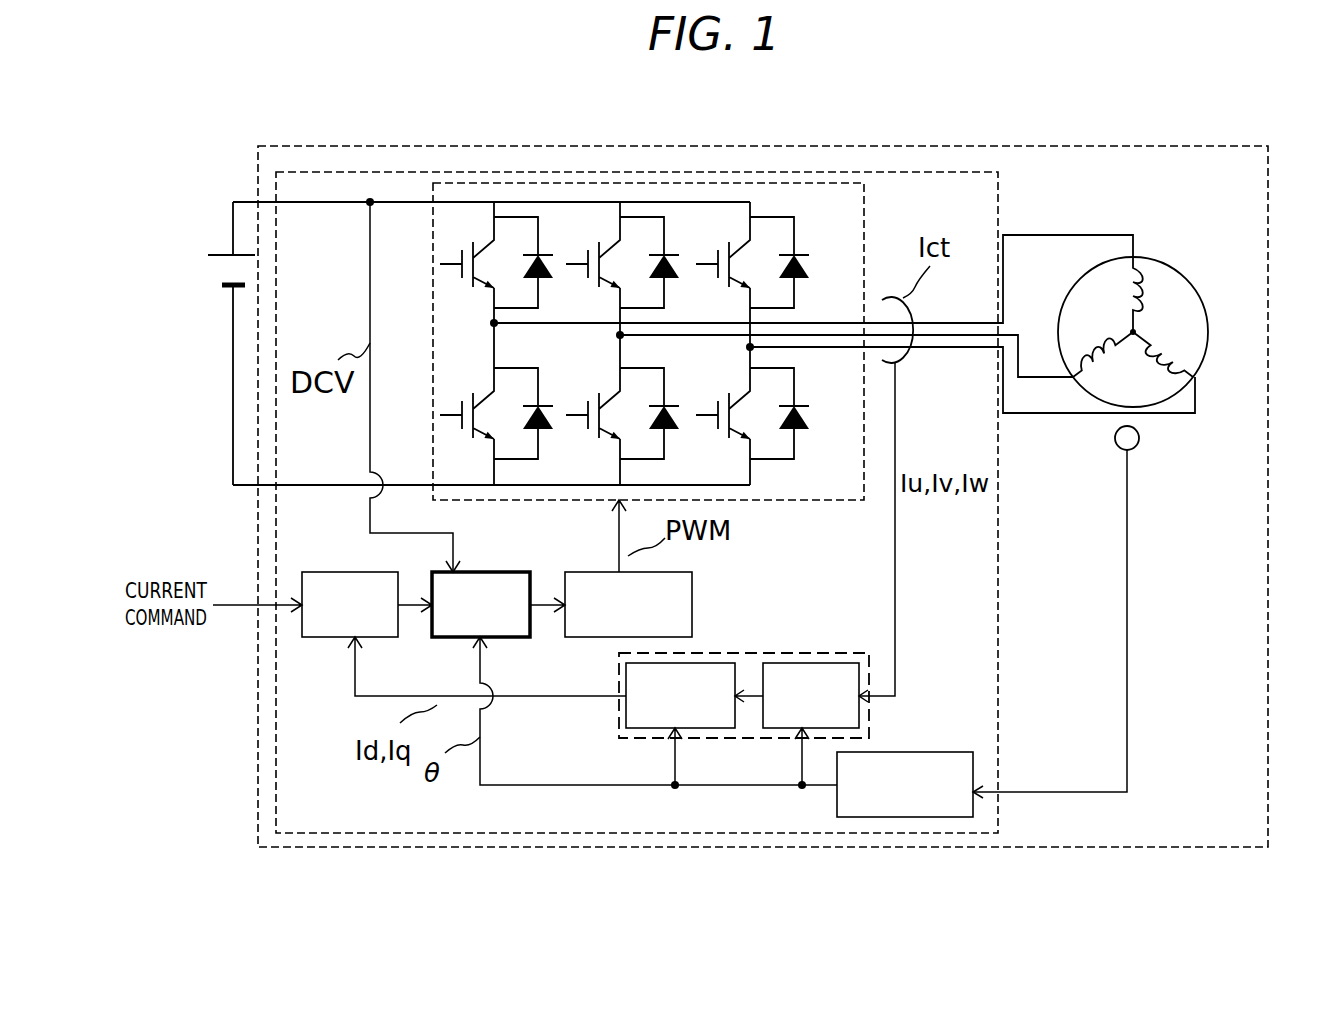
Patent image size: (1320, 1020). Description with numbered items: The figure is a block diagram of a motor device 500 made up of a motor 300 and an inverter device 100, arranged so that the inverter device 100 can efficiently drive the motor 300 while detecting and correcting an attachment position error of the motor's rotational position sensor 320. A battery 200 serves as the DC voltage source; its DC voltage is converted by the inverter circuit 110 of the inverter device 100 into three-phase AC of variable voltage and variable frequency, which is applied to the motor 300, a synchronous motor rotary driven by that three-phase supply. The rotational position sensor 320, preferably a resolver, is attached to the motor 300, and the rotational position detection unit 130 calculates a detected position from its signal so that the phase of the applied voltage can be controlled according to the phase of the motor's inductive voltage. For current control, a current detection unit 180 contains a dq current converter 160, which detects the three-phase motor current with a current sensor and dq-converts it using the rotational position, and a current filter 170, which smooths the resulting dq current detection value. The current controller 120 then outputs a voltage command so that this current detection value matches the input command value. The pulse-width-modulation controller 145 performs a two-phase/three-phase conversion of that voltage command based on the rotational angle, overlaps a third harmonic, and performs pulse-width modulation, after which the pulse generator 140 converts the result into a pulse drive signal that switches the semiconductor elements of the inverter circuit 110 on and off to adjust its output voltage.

The motor device 500 is at (825, 146).
The inverter device 100 is at (998, 217).
The inverter circuit 110 is at (940, 213).
The motor 300 is at (1188, 295).
The rotational position sensor 320 is at (1113, 452).
The battery 200 is at (222, 290).
The current controller 120 is at (343, 643).
The PWM controller 145 is at (480, 568).
The PWM generator 140 is at (692, 597).
The current detection unit 180 is at (745, 651).
The current filter 170 is at (619, 718).
The dq current converter 160 is at (850, 665).
The rotational position detection unit 130 is at (977, 778).